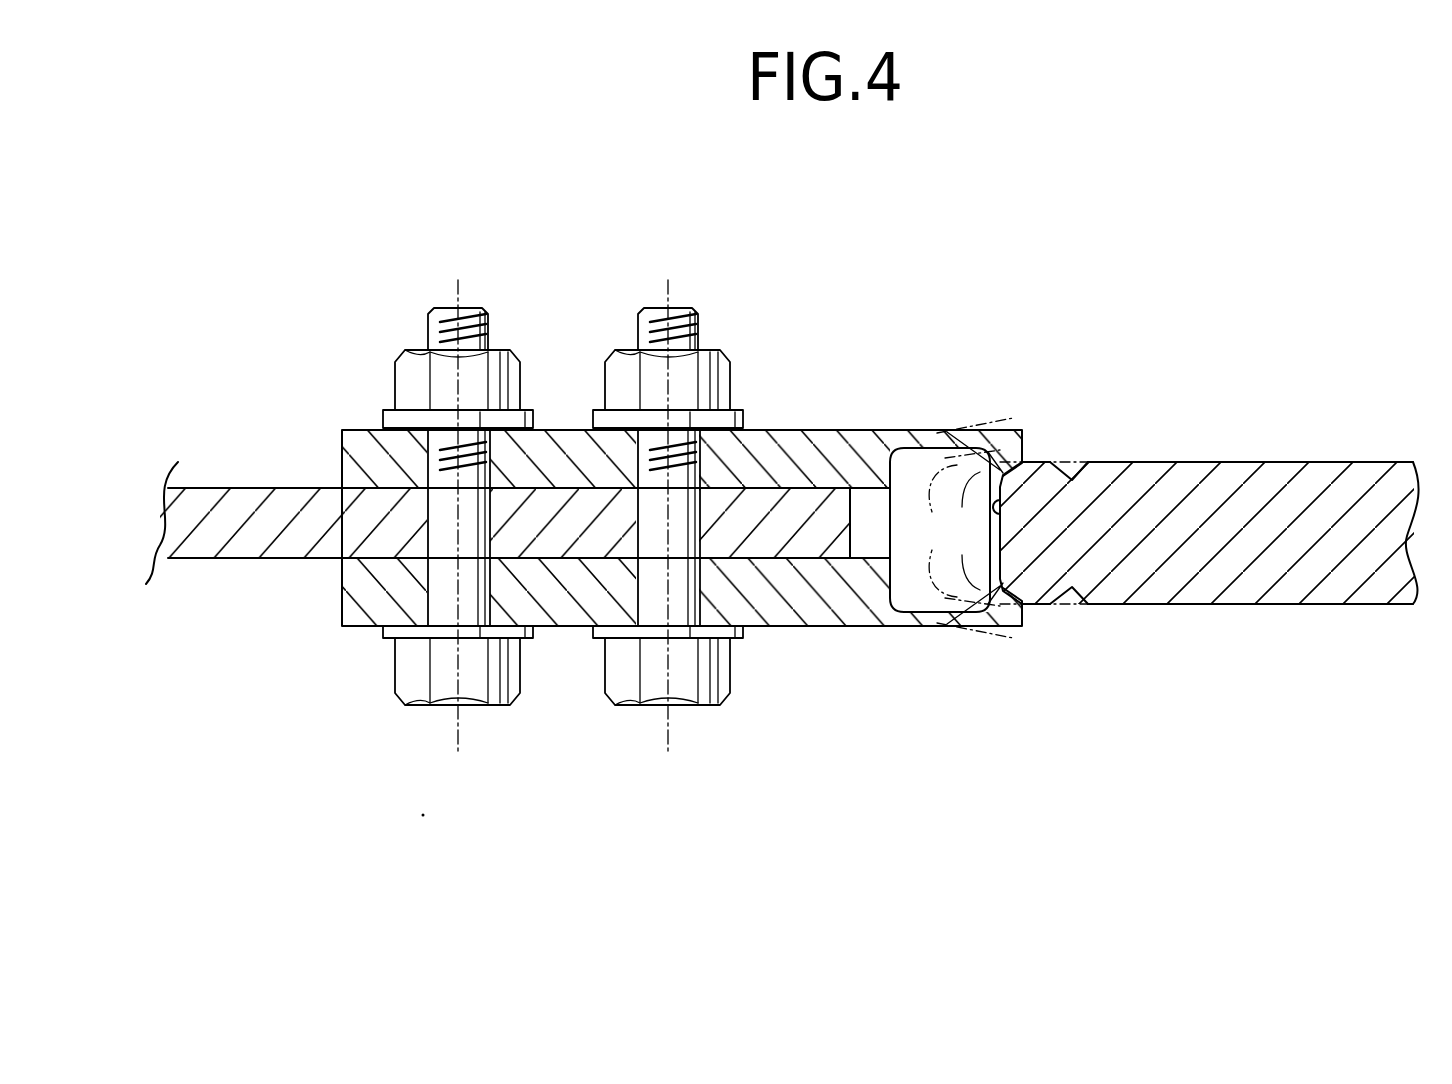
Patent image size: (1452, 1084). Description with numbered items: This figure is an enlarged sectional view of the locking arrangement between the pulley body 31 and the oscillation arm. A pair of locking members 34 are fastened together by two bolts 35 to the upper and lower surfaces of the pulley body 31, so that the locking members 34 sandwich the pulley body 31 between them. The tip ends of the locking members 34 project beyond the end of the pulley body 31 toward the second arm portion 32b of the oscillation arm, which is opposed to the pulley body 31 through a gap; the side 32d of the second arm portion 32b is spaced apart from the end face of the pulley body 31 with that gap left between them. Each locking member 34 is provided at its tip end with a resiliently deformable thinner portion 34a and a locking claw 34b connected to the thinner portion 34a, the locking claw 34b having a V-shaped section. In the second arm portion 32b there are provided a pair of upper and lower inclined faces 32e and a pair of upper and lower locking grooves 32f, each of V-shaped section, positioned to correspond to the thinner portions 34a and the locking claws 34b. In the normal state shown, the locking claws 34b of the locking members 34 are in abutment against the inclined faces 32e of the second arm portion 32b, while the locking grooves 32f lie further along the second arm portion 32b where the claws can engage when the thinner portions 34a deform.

The pulley body 31 is at (238, 497).
The second arm portion 32b is at (1253, 478).
The side 32d is at (970, 533).
The inclined faces 32e is at (957, 486).
The locking grooves 32f is at (1075, 460).
The locking members 34 is at (798, 428).
The thinner portion 34a is at (950, 430).
The locking claw 34b is at (995, 457).
The bolts 35 is at (658, 686).